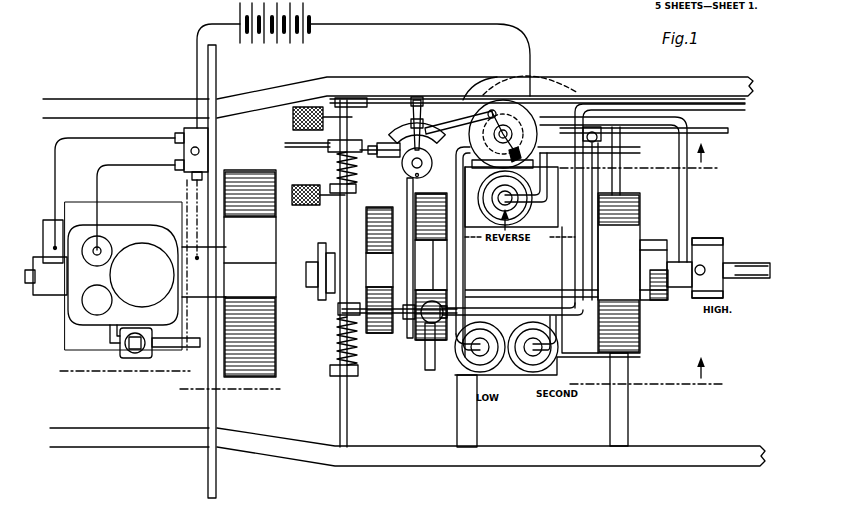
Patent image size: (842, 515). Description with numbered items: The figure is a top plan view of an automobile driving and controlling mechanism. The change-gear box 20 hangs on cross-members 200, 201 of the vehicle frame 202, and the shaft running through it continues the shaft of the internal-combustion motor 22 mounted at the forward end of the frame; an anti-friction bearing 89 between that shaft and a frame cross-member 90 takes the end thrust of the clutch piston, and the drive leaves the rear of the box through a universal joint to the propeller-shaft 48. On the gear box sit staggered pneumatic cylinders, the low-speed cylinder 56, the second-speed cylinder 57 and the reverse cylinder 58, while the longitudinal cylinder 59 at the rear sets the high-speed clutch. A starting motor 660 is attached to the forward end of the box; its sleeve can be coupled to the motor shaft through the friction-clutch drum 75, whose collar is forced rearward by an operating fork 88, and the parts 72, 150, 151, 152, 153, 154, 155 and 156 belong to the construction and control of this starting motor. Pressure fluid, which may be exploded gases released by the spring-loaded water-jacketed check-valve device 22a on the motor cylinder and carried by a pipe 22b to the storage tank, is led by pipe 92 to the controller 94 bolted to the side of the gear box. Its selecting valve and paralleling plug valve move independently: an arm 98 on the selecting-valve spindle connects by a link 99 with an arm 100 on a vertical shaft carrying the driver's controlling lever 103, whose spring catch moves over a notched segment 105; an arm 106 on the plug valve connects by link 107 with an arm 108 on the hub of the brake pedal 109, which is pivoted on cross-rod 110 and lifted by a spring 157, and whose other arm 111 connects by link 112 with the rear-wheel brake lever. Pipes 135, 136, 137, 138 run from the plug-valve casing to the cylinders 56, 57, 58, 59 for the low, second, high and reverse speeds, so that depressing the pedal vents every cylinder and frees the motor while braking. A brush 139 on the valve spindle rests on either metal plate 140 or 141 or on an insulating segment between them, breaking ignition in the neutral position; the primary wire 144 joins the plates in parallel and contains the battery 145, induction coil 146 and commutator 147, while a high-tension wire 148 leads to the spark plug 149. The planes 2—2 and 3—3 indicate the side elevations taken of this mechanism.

The plane 2— 2 is at (387, 266).
The plane 3— 3 is at (450, 380).
The change-gear box 20 is at (633, 327).
The internal-combustion motor 22 is at (70, 314).
The water-jacketed check-valve device 22a is at (124, 356).
The pipe 22b is at (170, 348).
The propeller-shaft 48 is at (752, 264).
The low-speed cylinder 56 is at (468, 366).
The second-speed cylinder 57 is at (535, 365).
The reverse cylinder 58 is at (520, 208).
The longitudinal cylinder 59 is at (647, 300).
The starting-motor part 72 is at (428, 366).
The friction-clutch drum 75 is at (379, 270).
The operating fork 88 is at (342, 306).
The anti-friction bearing 89 is at (326, 252).
The cross-member 90 is at (300, 402).
The pipe 92 is at (726, 129).
The controller 94 is at (522, 100).
The arm 98 is at (518, 112).
The link 99 is at (466, 124).
The arm 100 is at (405, 116).
The controlling lever 103 is at (416, 97).
The notched segment 105 is at (392, 133).
The arm 106 is at (491, 136).
The link 107 is at (386, 157).
The arm 108 is at (295, 145).
The pedal 109 is at (293, 122).
The cross-rod 110 is at (348, 428).
The arm 111 is at (350, 98).
The link 112 is at (745, 101).
The pipe 135 is at (467, 270).
The pipe 136 is at (575, 271).
The pipe 137 is at (687, 200).
The pipe 138 is at (555, 163).
The brush 139 is at (576, 88).
The metal plate 140 is at (510, 195).
The metal plate 141 is at (583, 136).
The primary wire 144 is at (400, 26).
The battery 145 is at (306, 18).
The induction coil 146 is at (190, 130).
The commutator 147 is at (50, 232).
The high-tension wire 148 is at (160, 164).
The spark plug 149 is at (92, 240).
The starting-motor part 150 is at (600, 247).
The starting-motor part 151 is at (413, 330).
The starting-motor part 152 is at (426, 300).
The starting-motor part 153 is at (358, 336).
The starting-motor part 154 is at (337, 346).
The starting-motor part 155 is at (292, 204).
The starting-motor part 156 is at (358, 366).
The spring 157 is at (335, 166).
The cross-member 200 is at (477, 438).
The cross-member 201 is at (628, 422).
The vehicle frame 202 is at (690, 466).
The starting motor 660 is at (407, 198).